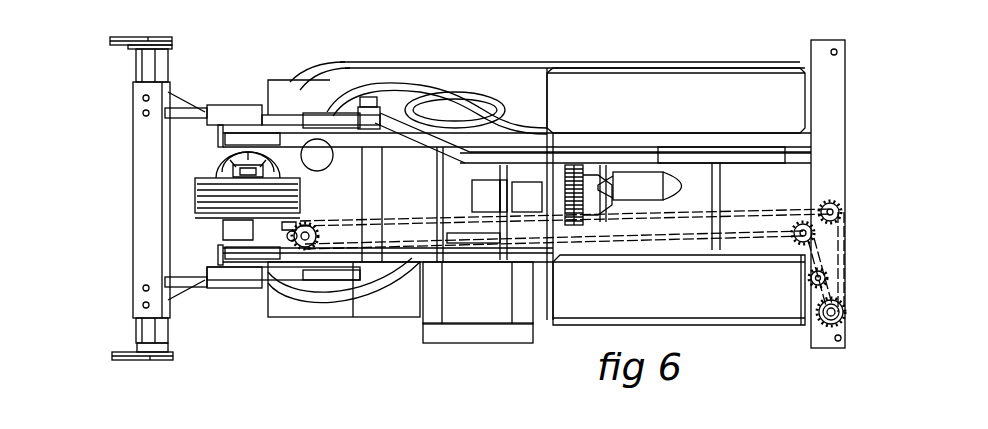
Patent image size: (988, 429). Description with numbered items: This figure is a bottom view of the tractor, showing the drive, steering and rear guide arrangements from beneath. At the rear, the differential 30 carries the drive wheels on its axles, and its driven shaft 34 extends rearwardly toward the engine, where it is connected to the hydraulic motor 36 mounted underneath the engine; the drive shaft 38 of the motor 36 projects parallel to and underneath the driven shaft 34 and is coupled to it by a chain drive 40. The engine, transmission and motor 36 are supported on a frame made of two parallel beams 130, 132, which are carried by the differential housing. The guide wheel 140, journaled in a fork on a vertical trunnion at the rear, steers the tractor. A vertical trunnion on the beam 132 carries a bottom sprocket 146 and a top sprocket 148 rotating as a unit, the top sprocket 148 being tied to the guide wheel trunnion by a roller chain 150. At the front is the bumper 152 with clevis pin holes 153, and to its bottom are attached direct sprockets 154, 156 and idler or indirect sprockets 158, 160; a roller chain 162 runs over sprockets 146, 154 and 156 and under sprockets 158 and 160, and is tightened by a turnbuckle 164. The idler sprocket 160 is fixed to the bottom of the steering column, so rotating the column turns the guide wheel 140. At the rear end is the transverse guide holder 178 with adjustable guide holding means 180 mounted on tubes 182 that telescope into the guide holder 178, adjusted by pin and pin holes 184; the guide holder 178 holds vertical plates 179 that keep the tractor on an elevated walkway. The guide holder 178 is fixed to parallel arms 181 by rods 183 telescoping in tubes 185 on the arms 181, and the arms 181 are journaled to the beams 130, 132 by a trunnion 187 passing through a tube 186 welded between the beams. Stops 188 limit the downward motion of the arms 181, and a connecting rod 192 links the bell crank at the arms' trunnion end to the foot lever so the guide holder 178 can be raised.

The differential 30 is at (750, 184).
The driven shaft 34 is at (587, 187).
The hydraulic motor 36 is at (478, 190).
The drive shaft 38 is at (533, 183).
The chain drive 40 is at (580, 165).
The beam 130 is at (463, 137).
The beam 132 is at (393, 253).
The guide wheel 140 is at (195, 180).
The bottom sprocket 146 is at (300, 246).
The top sprocket 148 is at (323, 221).
The roller chain 150 is at (283, 174).
The bumper 152 is at (838, 160).
The clevis pin holes 153 is at (837, 52).
The direct sprocket 154 is at (843, 212).
The direct sprocket 156 is at (822, 325).
The idler sprocket 158 is at (797, 238).
The idler sprocket 160 is at (812, 282).
The roller chain 162 is at (399, 212).
The turnbuckle 164 is at (487, 247).
The guide holder 178 is at (143, 192).
The vertical plates 179 is at (128, 36).
The guide holding means 180 is at (168, 46).
The parallel arms 181 is at (278, 116).
The tubes 182 is at (147, 66).
The rods 183 is at (197, 112).
The pin and pin holes 184 is at (128, 107).
The tubes 185 is at (238, 106).
The tube 186 is at (372, 163).
The trunnion 187 is at (383, 118).
The stops 188 is at (325, 116).
The connecting rod 192 is at (686, 158).